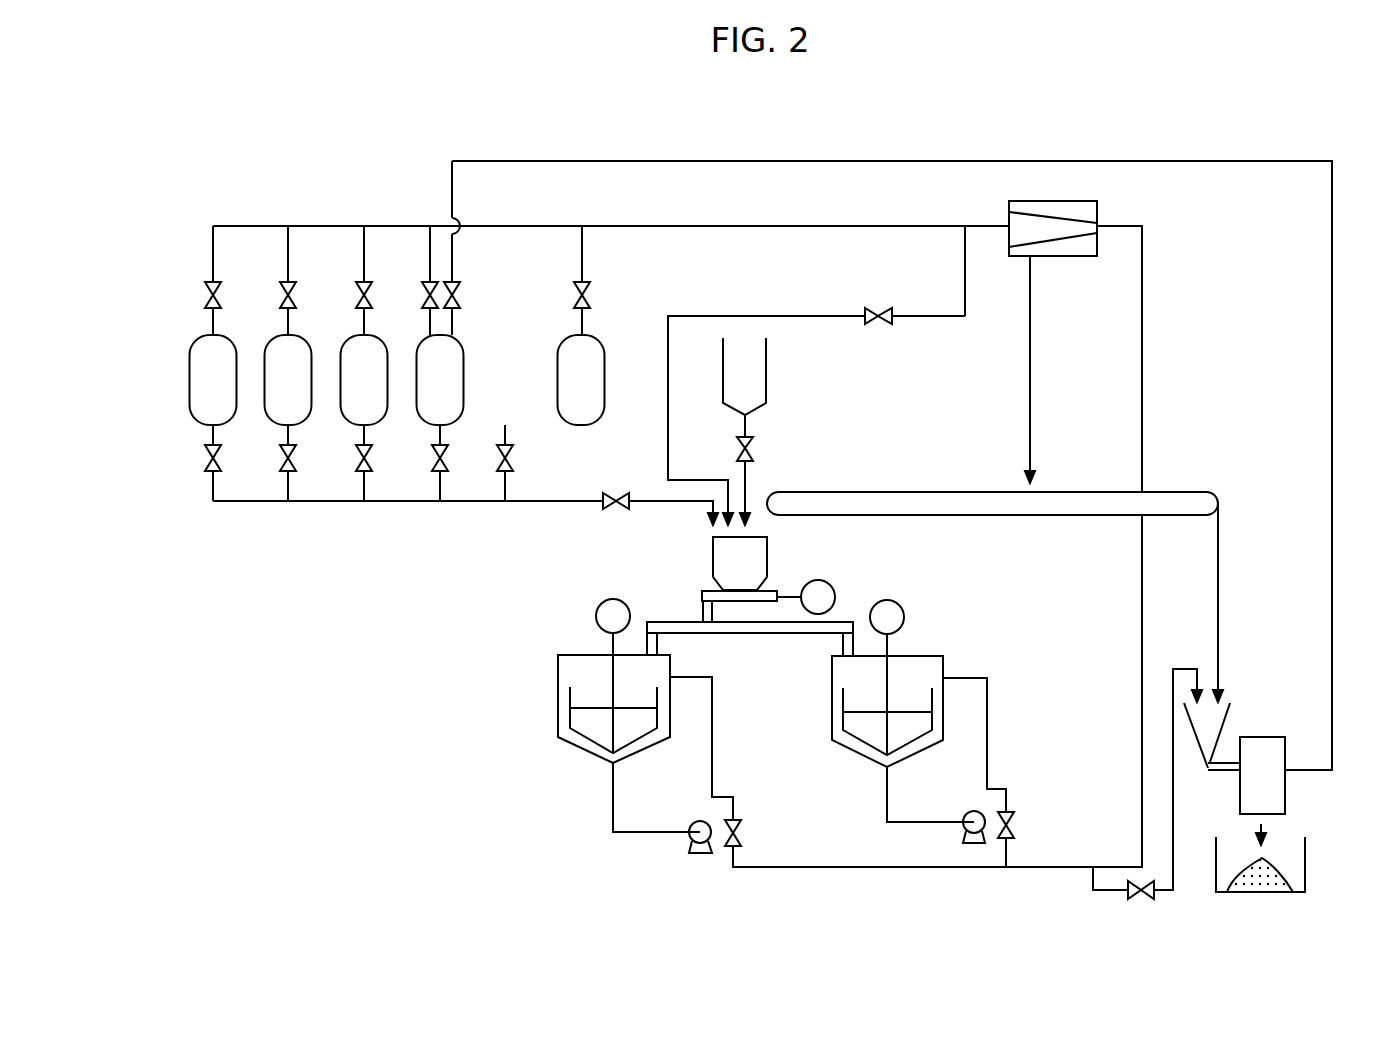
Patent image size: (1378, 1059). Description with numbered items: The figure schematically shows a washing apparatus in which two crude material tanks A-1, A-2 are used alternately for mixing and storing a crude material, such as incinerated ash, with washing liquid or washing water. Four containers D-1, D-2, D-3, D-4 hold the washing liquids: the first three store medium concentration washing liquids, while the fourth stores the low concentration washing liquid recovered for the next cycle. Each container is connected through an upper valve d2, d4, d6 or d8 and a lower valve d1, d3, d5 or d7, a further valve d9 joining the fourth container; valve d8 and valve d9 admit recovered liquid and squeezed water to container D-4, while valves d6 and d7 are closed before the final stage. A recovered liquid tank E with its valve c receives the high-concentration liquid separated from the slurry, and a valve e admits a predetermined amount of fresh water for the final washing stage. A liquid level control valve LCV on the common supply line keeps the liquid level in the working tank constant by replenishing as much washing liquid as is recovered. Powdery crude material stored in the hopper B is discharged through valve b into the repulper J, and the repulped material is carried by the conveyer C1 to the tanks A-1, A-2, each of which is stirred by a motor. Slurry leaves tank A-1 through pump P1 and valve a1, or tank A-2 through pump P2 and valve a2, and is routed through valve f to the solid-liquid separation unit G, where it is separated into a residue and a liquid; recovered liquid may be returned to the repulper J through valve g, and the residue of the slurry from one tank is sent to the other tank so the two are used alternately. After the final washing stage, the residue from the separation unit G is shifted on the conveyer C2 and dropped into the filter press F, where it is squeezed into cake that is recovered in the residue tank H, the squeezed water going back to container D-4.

The container for washing liquid D-1 is at (189, 362).
The container for washing liquid D-2 is at (264, 362).
The container for washing liquid D-3 is at (340, 362).
The container for washing liquid D-4 is at (416, 362).
The recovered liquid tank E is at (558, 357).
The valve d1 is at (205, 464).
The valve d2 is at (208, 285).
The valve d3 is at (280, 464).
The valve d4 is at (282, 285).
The valve d5 is at (357, 454).
The valve d6 is at (358, 285).
The valve d7 is at (433, 458).
The valve d8 is at (424, 285).
The valve d9 is at (460, 286).
The valve c is at (580, 284).
The valve e is at (498, 458).
The liquid level control valve LCV is at (620, 493).
The valve g is at (880, 306).
The hopper for feeding crude material B is at (768, 366).
The valve b is at (737, 440).
The conveyer C2 is at (843, 492).
The separation unit G is at (1070, 201).
The repulper J is at (769, 546).
The conveyer C1 is at (741, 634).
The crude material tank A-1 is at (558, 677).
The crude material tank A-2 is at (832, 726).
The pump P1 is at (688, 850).
The pump P2 is at (962, 840).
The valve a1 is at (745, 828).
The valve a2 is at (1016, 823).
The filter press F is at (1286, 798).
The valve f is at (1143, 900).
The residue tank H is at (1307, 853).